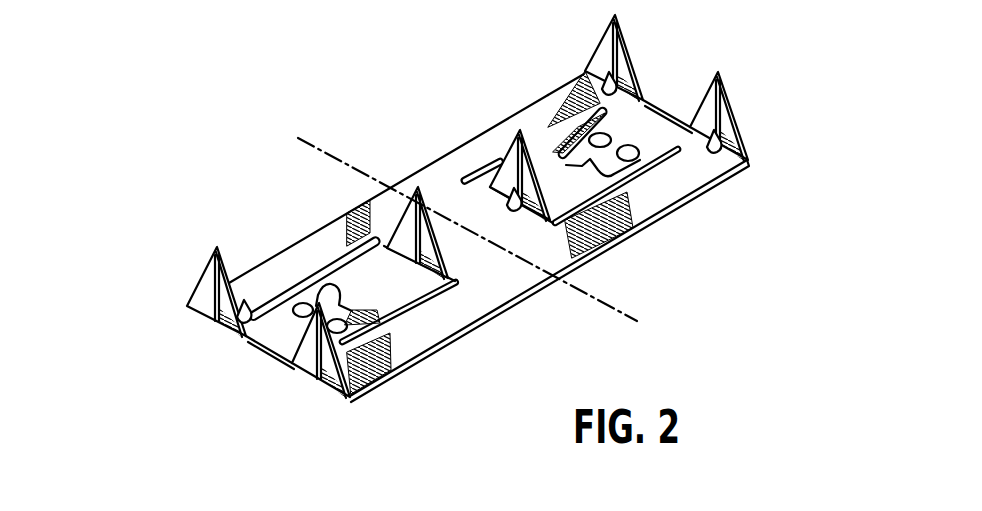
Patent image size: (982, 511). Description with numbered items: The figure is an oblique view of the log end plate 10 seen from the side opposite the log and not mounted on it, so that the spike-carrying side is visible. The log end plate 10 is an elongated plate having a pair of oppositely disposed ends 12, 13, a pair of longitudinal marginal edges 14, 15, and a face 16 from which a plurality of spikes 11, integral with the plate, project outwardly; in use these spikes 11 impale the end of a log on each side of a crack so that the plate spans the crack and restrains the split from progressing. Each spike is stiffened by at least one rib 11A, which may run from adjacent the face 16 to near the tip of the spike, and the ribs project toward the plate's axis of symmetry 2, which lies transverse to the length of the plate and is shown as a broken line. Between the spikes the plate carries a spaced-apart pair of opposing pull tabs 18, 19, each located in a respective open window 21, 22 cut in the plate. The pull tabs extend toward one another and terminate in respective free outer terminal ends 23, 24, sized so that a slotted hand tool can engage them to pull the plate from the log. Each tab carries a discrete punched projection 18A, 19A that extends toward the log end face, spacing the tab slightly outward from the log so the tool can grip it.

The axis of symmetry 2 is at (471, 228).
The log end plate 10 is at (224, 346).
The spikes 11 is at (203, 268).
The rib 11A is at (195, 298).
The end 12 is at (263, 352).
The end 13 is at (667, 110).
The longitudinal marginal edge 14 is at (500, 312).
The longitudinal marginal edge 15 is at (413, 172).
The face 16 is at (453, 177).
The pull tab 18 is at (330, 290).
The projection 18A is at (315, 302).
The pull tab 19 is at (632, 160).
The projection 19A is at (640, 148).
The open window 21 is at (417, 295).
The open window 22 is at (540, 155).
The free outer terminal end 23 is at (420, 305).
The free outer terminal end 24 is at (602, 250).